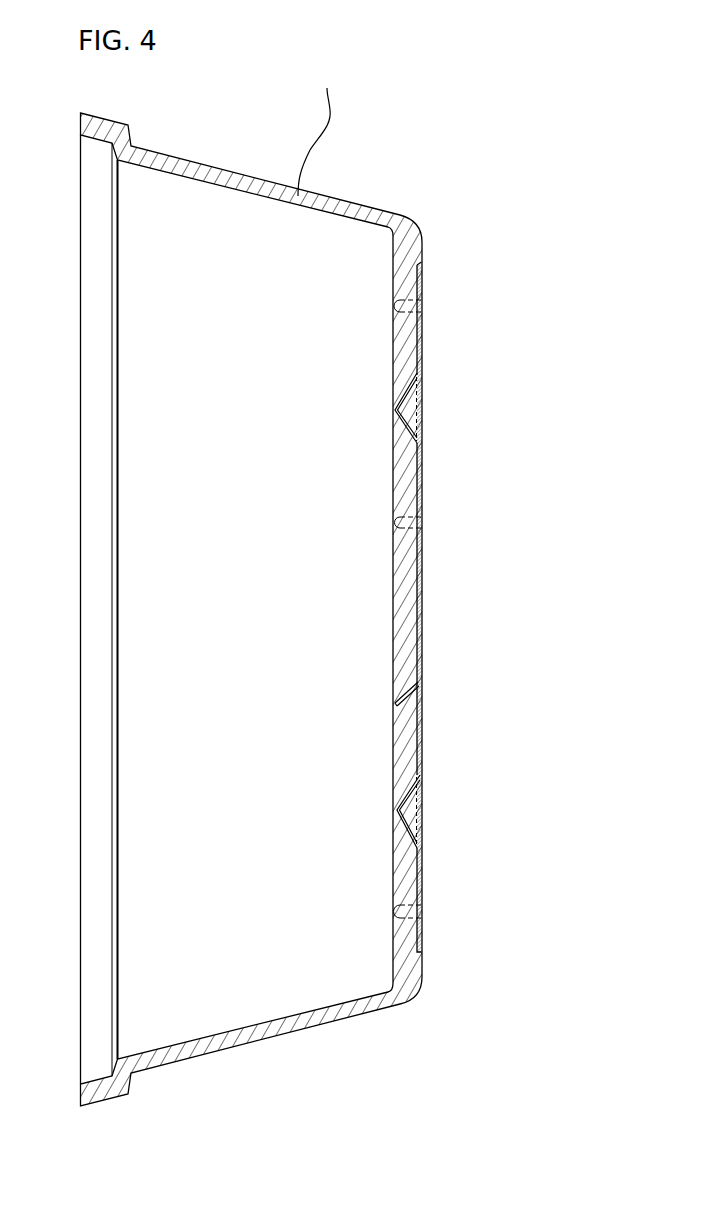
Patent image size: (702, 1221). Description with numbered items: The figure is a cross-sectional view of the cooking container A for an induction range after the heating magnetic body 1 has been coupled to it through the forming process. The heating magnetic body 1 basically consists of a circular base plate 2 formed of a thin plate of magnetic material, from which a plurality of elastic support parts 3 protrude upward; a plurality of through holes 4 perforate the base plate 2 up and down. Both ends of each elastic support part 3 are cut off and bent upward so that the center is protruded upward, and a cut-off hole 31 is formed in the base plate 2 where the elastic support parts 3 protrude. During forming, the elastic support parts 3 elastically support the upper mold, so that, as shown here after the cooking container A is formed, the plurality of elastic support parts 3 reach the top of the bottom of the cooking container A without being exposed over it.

The heating magnetic body 1 is at (298, 610).
The base plate 2 is at (422, 732).
The elastic support parts 3 is at (397, 701).
The cut-off hole 31 is at (422, 808).
The through holes 4 is at (421, 620).
The cooking container A is at (317, 132).